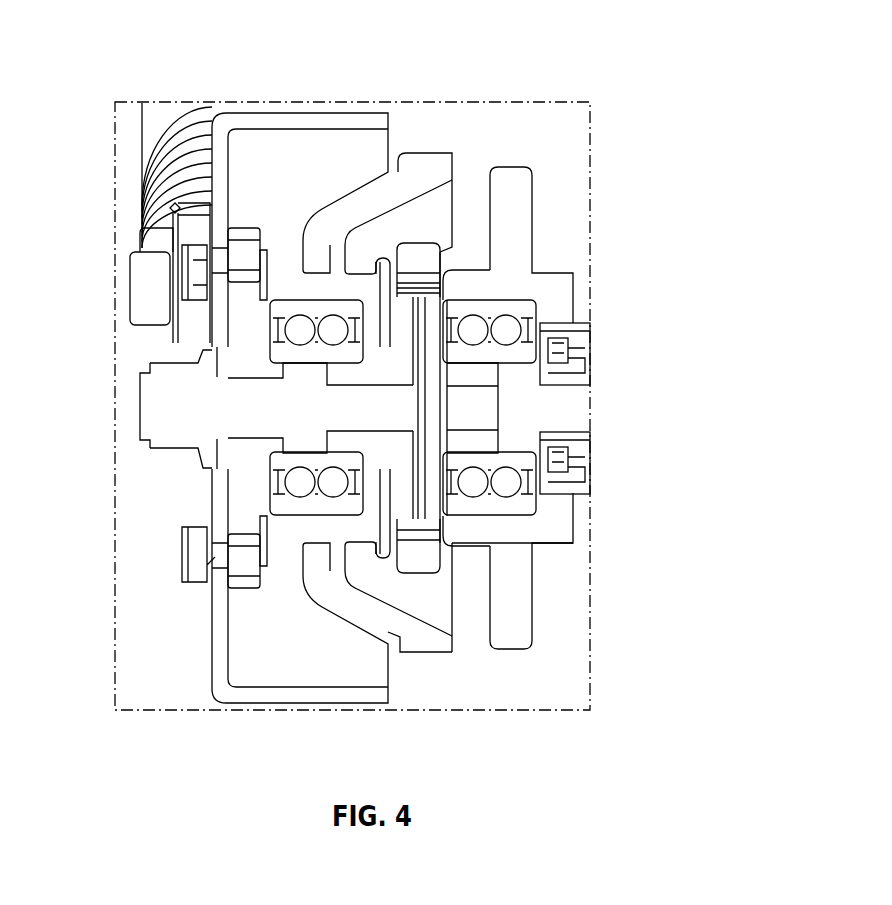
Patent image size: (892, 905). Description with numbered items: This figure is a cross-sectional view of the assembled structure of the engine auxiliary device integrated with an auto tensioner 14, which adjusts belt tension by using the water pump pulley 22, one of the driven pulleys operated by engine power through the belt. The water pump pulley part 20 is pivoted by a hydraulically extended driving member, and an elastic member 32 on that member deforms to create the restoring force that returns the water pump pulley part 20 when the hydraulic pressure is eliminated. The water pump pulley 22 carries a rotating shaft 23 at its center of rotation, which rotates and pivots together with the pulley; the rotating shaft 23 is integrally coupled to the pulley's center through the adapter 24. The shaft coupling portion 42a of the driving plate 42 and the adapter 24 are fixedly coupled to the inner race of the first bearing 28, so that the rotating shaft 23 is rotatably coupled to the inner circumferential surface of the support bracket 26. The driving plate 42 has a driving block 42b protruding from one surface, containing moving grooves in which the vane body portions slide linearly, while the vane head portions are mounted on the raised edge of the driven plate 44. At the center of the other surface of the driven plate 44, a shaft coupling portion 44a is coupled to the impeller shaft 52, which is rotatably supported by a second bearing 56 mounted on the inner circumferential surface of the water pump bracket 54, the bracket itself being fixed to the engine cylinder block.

The auto tensioner 14 is at (441, 125).
The water pump pulley part 20 is at (270, 103).
The water pump pulley 22 is at (350, 112).
The rotating shaft 23 is at (167, 408).
The adapter 24 is at (242, 503).
The support bracket 26 is at (405, 152).
The first bearing 28 is at (263, 272).
The elastic member 32 is at (163, 132).
The driving plate 42 is at (378, 575).
The shaft coupling portion 42a is at (337, 442).
The driving block 42b is at (413, 290).
The driven plate 44 is at (429, 585).
The shaft coupling portion 44a is at (487, 407).
The impeller shaft 52 is at (573, 430).
The water pump bracket 54 is at (517, 166).
The second bearing 56 is at (517, 300).